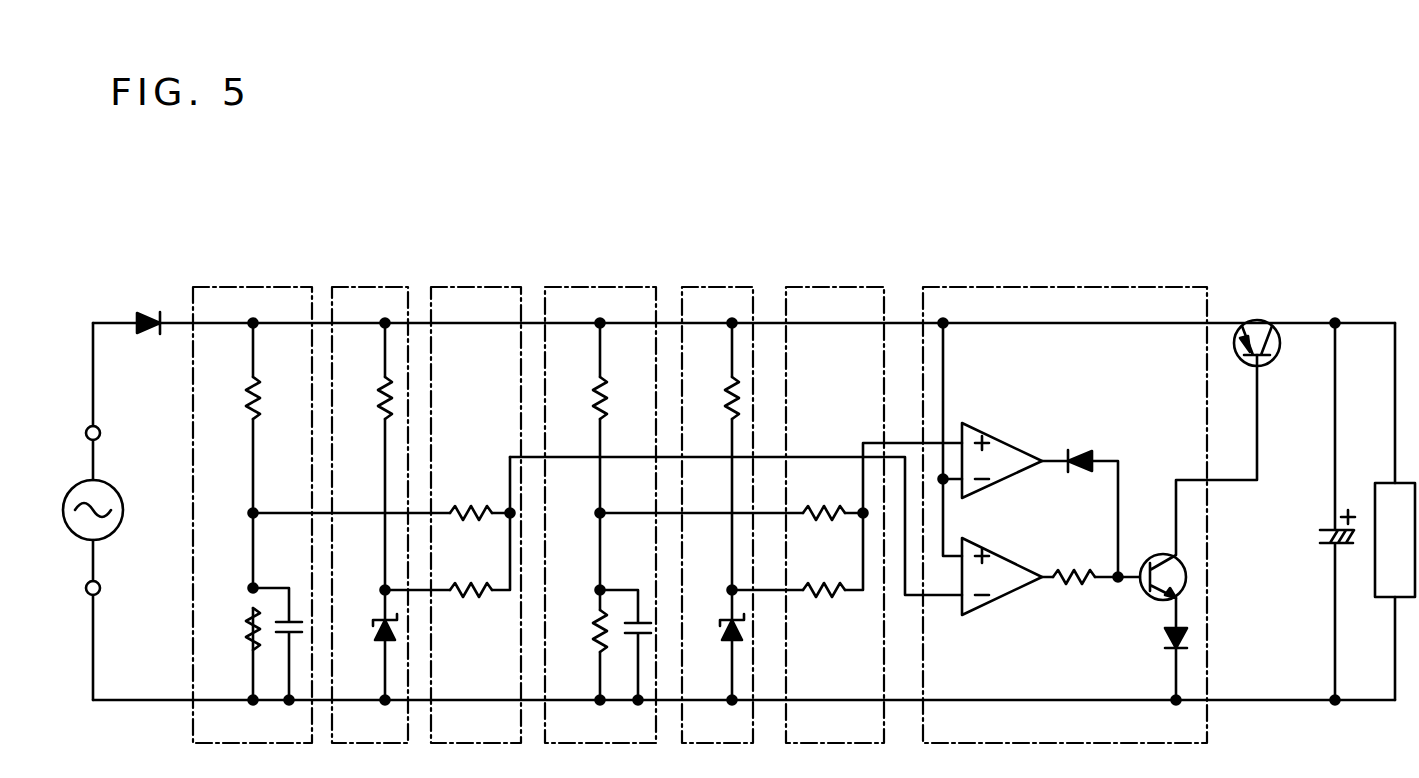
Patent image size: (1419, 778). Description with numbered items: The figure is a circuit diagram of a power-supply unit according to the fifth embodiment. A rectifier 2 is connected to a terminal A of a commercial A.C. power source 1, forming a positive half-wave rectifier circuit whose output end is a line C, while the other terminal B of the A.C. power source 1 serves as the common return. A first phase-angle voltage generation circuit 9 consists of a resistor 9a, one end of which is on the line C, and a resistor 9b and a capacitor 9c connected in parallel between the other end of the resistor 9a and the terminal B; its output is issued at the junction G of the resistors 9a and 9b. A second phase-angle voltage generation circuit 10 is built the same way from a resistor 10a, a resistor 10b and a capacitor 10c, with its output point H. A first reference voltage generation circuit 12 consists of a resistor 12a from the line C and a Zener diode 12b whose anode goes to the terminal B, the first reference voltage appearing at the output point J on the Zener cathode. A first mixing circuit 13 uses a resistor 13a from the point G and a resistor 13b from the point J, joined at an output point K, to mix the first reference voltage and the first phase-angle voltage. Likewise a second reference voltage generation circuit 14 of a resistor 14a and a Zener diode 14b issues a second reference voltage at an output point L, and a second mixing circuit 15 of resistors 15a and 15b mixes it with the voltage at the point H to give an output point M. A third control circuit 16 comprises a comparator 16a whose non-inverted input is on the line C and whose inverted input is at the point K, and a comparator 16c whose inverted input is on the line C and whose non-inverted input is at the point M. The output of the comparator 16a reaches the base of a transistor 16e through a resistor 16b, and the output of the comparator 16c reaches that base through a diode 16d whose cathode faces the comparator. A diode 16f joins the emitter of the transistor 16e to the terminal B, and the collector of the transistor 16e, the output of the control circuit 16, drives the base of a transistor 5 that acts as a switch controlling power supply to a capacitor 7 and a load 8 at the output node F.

The commercial A.C. power source 1 is at (124, 508).
The rectifier 2 is at (148, 316).
The transistor (switch) 5 is at (1258, 320).
The capacitor 7 is at (1328, 528).
The load 8 is at (1385, 604).
The first phase-angle voltage generation circuit 9 is at (257, 286).
The resistor 9a is at (250, 398).
The resistor 9b is at (250, 628).
The capacitor 9c is at (295, 620).
The second phase-angle voltage generation circuit 10 is at (598, 286).
The resistor 10a is at (612, 398).
The resistor 10b is at (596, 630).
The capacitor 10c is at (641, 620).
The first reference voltage generation circuit 12 is at (365, 286).
The resistor 12a is at (383, 398).
The Zener diode 12b is at (380, 627).
The first mixing circuit 13 is at (470, 286).
The resistor 13a is at (473, 505).
The resistor 13b is at (472, 598).
The second reference voltage generation circuit 14 is at (718, 286).
The resistor 14a is at (730, 400).
The Zener diode 14b is at (727, 644).
The second mixing circuit 15 is at (832, 286).
The resistor 15a is at (826, 521).
The resistor 15b is at (826, 598).
The third control circuit 16 is at (1060, 286).
The comparator 16a is at (1000, 612).
The resistor 16b is at (1073, 592).
The comparator 16c is at (1012, 442).
The diode 16d is at (1085, 455).
The transistor 16e is at (1148, 593).
The diode 16f is at (1186, 638).
The terminal A is at (100, 431).
The terminal B is at (100, 590).
The line C is at (908, 321).
The output node F is at (1336, 320).
The output point G is at (256, 511).
The output point H is at (596, 510).
The output point J is at (388, 587).
The output point K is at (506, 518).
The output point L is at (728, 586).
The output point M is at (858, 510).